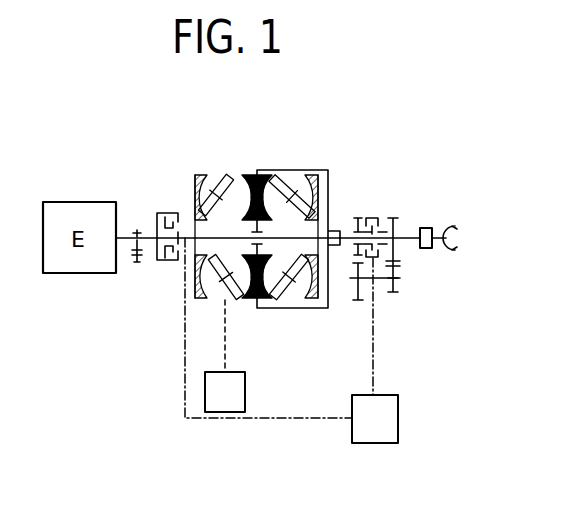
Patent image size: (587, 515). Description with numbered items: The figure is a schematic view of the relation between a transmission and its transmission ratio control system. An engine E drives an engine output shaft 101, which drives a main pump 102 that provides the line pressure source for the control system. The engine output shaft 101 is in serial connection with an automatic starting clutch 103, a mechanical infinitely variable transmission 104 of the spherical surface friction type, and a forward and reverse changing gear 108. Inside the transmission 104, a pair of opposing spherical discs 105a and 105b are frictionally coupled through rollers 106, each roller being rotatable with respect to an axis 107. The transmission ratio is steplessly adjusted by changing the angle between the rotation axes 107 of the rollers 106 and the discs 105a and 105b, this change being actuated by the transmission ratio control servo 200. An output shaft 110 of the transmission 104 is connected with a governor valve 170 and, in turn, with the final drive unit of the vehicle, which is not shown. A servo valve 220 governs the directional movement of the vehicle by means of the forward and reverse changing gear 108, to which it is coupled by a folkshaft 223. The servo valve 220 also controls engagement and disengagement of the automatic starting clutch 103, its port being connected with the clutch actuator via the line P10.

The engine output shaft 101 is at (126, 237).
The main pump 102 is at (136, 261).
The automatic starting clutch 103 is at (165, 261).
The mechanical infinitely variable transmission 104 is at (330, 121).
The spherical disc 105a is at (201, 175).
The spherical disc 105b is at (250, 175).
The roller 106 is at (279, 180).
The rotation axis of roller 107 is at (222, 296).
The forward and reverse changing gear 108 is at (373, 217).
The output shaft 110 is at (407, 232).
The governor valve 170 is at (430, 249).
The transmission ratio control servo 200 is at (246, 392).
The servo valve 220 is at (375, 419).
The folkshaft 223 is at (374, 327).
The line P10 is at (184, 378).